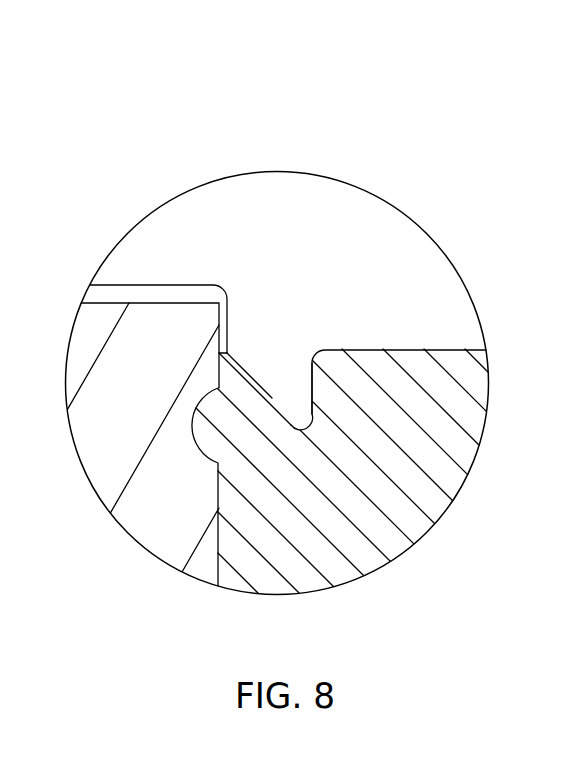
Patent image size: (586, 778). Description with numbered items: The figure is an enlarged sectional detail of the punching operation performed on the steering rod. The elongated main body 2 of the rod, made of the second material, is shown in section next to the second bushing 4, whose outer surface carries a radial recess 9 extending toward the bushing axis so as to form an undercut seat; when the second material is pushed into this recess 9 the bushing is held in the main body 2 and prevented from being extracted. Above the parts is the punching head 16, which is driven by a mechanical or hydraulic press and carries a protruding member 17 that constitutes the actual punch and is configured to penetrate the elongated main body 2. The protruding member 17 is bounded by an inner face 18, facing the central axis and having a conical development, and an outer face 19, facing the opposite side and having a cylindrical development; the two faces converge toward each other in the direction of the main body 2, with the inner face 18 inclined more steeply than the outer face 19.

The elongated main body 2 is at (310, 553).
The second bushing 4 is at (129, 352).
The radial recess 9 is at (233, 437).
The punching head 16 is at (187, 245).
The protruding member 17 is at (285, 392).
The inner face 18 is at (255, 407).
The outer face 19 is at (325, 388).